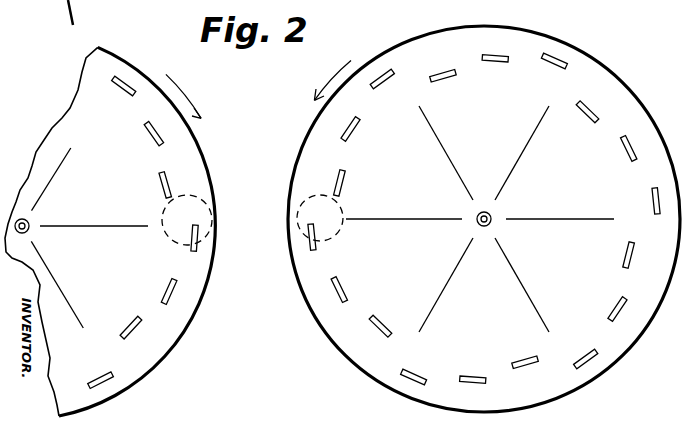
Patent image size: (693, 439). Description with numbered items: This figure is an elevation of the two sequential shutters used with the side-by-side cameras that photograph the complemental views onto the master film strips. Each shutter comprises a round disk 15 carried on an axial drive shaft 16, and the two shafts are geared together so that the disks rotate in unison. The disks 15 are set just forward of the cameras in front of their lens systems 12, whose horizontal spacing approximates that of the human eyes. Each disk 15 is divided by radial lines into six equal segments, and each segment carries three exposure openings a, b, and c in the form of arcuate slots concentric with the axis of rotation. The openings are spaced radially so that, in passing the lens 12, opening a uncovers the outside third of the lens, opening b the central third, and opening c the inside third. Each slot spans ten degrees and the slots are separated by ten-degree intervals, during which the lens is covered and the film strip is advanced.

The lens system 12 is at (168, 241).
The round disk 15 is at (146, 374).
The axial drive shaft 16 is at (33, 224).
The exposure opening a is at (160, 189).
The exposure opening b is at (150, 136).
The exposure opening c is at (122, 90).